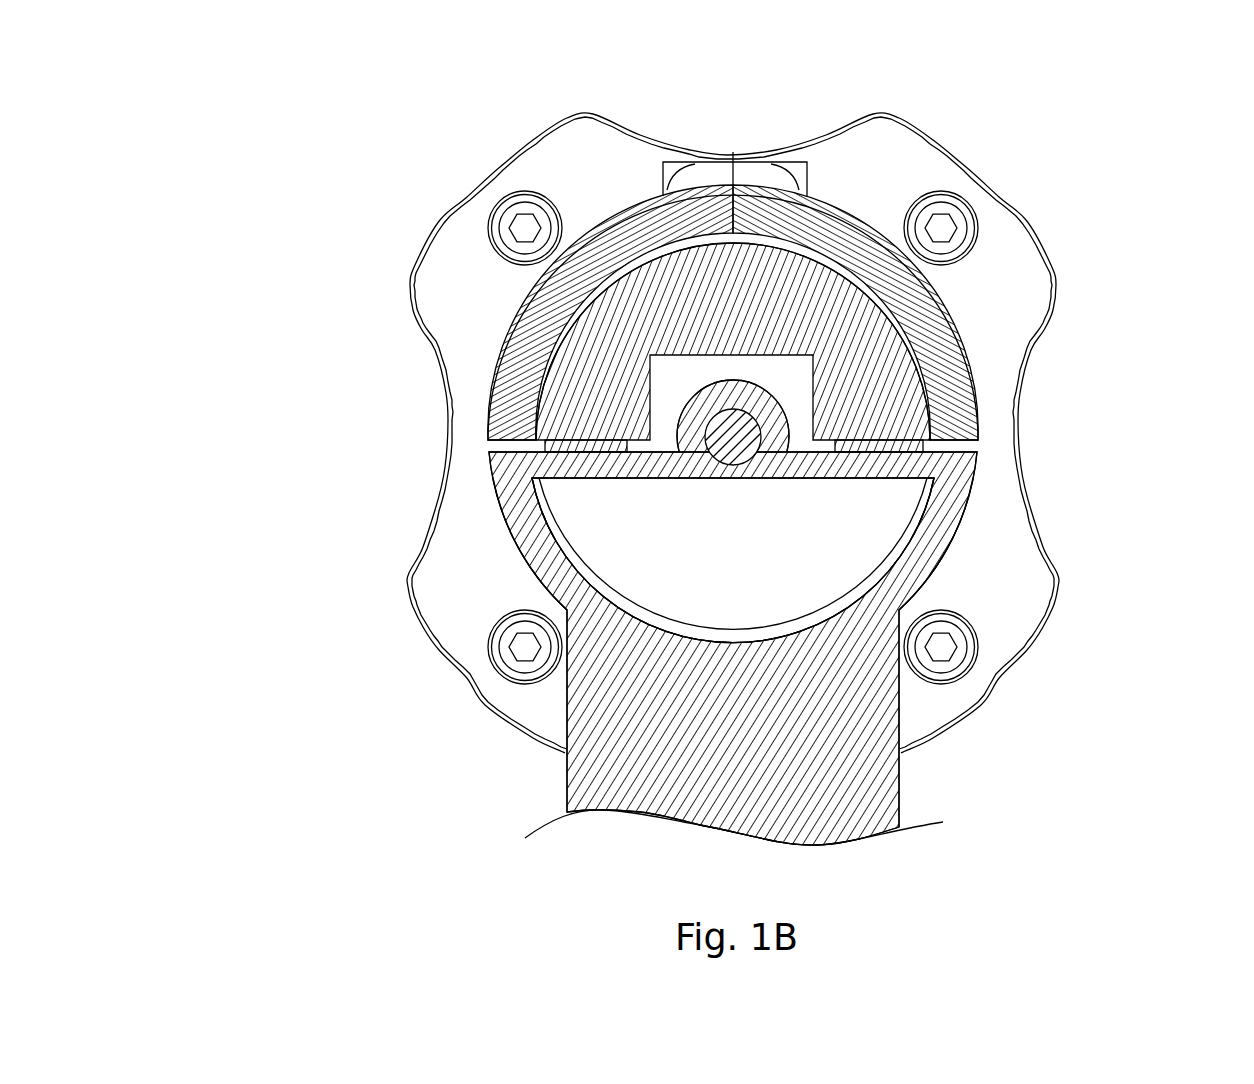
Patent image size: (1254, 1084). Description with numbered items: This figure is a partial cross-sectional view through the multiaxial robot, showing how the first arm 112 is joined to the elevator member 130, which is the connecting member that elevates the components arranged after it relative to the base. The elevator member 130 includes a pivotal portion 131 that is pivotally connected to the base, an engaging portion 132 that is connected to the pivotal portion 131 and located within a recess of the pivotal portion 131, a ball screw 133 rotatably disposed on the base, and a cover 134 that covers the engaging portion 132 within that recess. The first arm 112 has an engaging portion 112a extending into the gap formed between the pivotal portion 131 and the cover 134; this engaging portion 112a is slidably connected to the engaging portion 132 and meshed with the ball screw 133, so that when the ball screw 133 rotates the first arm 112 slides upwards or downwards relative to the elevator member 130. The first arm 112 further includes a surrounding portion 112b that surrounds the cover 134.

The first arm 112 is at (862, 792).
The engaging portion of the first arm 112a is at (710, 440).
The surrounding portion 112b is at (933, 555).
The elevator member 130 is at (202, 352).
The pivotal portion 131 is at (540, 318).
The engaging portion 132 is at (582, 393).
The ball screw 133 is at (730, 437).
The cover 134 is at (565, 547).